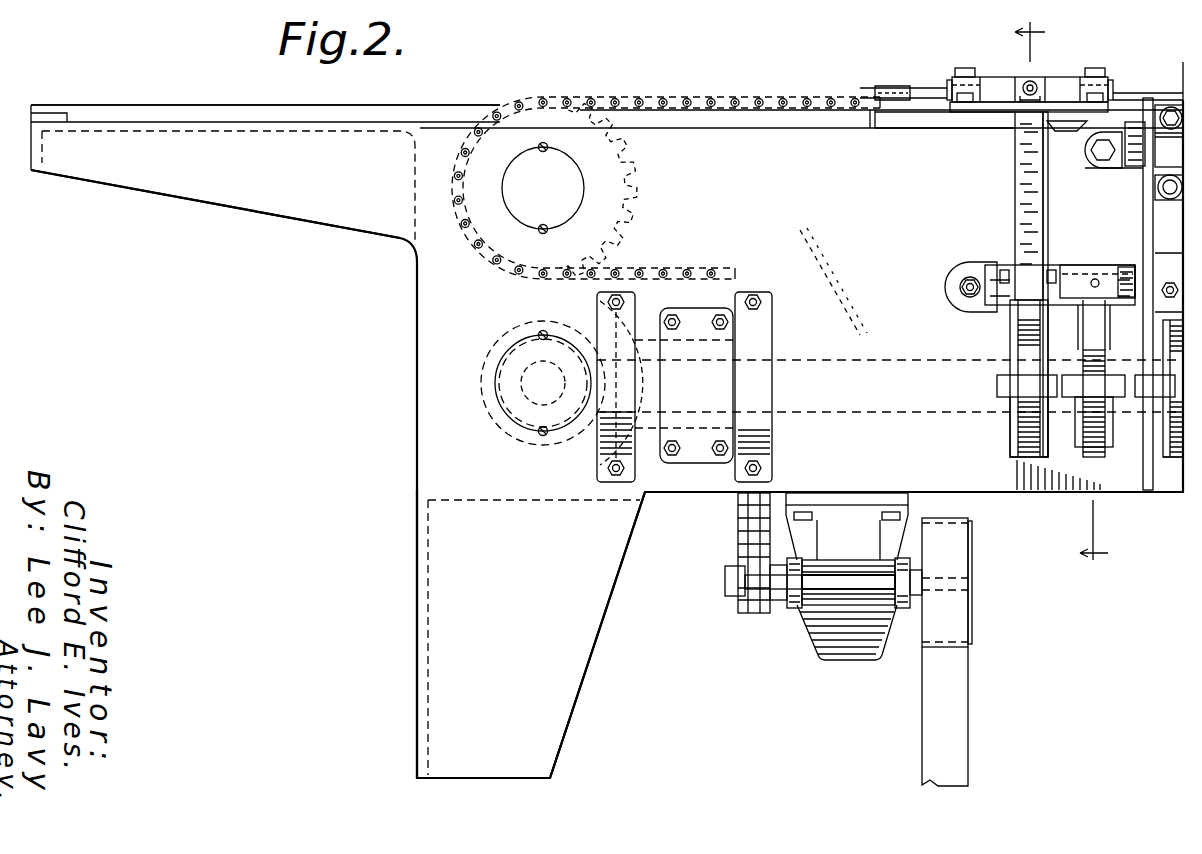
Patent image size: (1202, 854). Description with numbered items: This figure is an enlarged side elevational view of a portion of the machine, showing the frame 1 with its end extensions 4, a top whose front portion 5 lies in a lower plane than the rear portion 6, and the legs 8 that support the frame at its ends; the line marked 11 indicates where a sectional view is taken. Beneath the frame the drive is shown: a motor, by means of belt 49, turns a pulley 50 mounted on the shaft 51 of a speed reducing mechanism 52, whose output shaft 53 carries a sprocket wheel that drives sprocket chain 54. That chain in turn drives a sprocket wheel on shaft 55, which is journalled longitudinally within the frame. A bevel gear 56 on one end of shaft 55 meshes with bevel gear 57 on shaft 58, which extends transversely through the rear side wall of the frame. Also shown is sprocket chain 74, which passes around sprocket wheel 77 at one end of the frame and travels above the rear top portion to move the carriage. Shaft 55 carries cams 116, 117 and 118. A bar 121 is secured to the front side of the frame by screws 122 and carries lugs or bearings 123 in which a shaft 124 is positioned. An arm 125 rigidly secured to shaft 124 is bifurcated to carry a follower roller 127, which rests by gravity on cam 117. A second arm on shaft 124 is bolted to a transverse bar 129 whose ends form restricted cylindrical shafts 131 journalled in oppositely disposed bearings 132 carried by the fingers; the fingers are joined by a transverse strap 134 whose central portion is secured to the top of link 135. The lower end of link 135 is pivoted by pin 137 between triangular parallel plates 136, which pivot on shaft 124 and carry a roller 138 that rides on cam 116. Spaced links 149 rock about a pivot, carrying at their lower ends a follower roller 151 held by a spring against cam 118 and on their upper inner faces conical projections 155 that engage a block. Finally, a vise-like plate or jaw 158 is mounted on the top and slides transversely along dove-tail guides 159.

The frame 1 is at (429, 351).
The end extensions 4 is at (190, 186).
The front portion of the top 5 is at (268, 132).
The rear portion of the top 6 is at (317, 105).
The legs 8 is at (575, 643).
The section line 11 is at (1060, 296).
The belt 49 is at (956, 677).
The pulley 50 is at (970, 560).
The shaft 51 is at (918, 596).
The speed reducing mechanism 52 is at (850, 650).
The output shaft 53 is at (725, 585).
The sprocket chain 54 is at (738, 530).
The shaft 55 is at (890, 401).
The bevel gear 56 is at (658, 388).
The bevel gear 57 is at (497, 325).
The shaft 58 is at (522, 390).
The sprocket chain 74 is at (680, 268).
The sprocket wheel 77 is at (612, 197).
The cam 116 is at (1025, 437).
The cam 117 is at (1093, 440).
The cam 118 is at (1178, 458).
The bar 121 is at (967, 272).
The screws 122 is at (966, 293).
The lugs or bearings 123 is at (1056, 268).
The shaft 124 is at (1138, 275).
The arm 125 is at (1097, 298).
The follower roller 127 is at (1097, 405).
The transverse bar 129 is at (1058, 84).
The cylindrical shafts 131 is at (947, 88).
The bearings 132 is at (975, 88).
The transverse strap 134 is at (960, 110).
The link 135 is at (1015, 176).
The parallel plates 136 is at (1010, 343).
The pin 137 is at (1053, 275).
The roller 138 is at (1010, 368).
The links 149 is at (1148, 213).
The follower roller 151 is at (1166, 397).
The conical projection 155 is at (1165, 93).
The vise-like plate or jaw 158 is at (983, 120).
The dove-tail guides 159 is at (1065, 132).